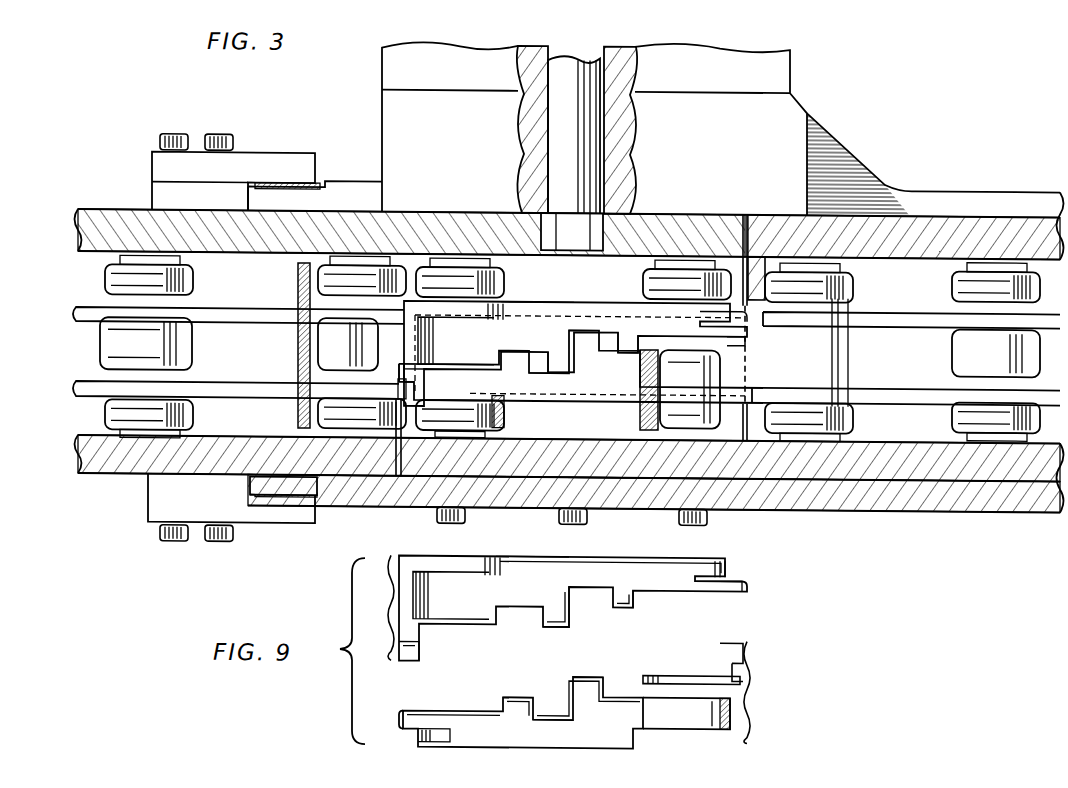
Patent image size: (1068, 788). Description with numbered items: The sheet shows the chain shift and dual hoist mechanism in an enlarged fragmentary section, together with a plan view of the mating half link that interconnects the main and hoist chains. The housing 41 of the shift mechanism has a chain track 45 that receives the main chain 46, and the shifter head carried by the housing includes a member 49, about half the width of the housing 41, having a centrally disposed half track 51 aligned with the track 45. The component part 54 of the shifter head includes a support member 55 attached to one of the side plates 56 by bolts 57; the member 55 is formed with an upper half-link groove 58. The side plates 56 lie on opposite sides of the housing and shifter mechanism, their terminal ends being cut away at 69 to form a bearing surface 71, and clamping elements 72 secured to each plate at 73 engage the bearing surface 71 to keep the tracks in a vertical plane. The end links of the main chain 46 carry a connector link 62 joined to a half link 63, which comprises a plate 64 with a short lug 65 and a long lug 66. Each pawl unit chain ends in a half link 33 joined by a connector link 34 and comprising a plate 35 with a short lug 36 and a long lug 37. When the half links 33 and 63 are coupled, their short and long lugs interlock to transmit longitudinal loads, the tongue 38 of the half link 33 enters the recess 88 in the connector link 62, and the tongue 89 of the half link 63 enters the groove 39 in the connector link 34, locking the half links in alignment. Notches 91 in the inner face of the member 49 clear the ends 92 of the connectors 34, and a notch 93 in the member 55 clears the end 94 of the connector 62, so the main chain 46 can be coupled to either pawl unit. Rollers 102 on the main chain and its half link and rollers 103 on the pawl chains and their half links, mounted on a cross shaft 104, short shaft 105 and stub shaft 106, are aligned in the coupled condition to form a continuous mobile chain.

In FIG. 3, the half link 33 is at (588, 405).
In FIG. 9, the half link 33 is at (468, 708).
In FIG. 3, the connector link 34 is at (840, 358).
In FIG. 9, the connector link 34 is at (742, 707).
In FIG. 3, the plate 35 is at (597, 394).
In FIG. 9, the plate 35 is at (553, 722).
In FIG. 3, the short lug 36 is at (516, 349).
In FIG. 9, the short lug 36 is at (518, 700).
In FIG. 3, the long lug 37 is at (590, 333).
In FIG. 9, the long lug 37 is at (598, 690).
In FIG. 3, the tongue 38 is at (403, 366).
In FIG. 9, the tongue 38 is at (403, 716).
In FIG. 3, the groove 39 is at (745, 336).
In FIG. 9, the groove 39 is at (744, 667).
In FIG. 3, the housing 41 is at (90, 216).
In FIG. 3, the chain track 45 is at (106, 250).
In FIG. 3, the main chain 46 is at (246, 298).
In FIG. 3, the member 49 is at (393, 228).
In FIG. 3, the half track 51 is at (640, 254).
In FIG. 3, the component part 54 is at (660, 488).
In FIG. 3, the support member 55 is at (510, 478).
In FIG. 3, the side plate 56 is at (918, 186).
In FIG. 3, the bolts 57 is at (437, 513).
In FIG. 3, the upper half-link groove 58 is at (585, 436).
In FIG. 3, the connector link 62 is at (393, 298).
In FIG. 9, the connector link 62 is at (398, 570).
In FIG. 3, the half link 63 is at (593, 292).
In FIG. 9, the half link 63 is at (690, 606).
In FIG. 3, the plate 64 is at (545, 313).
In FIG. 9, the plate 64 is at (539, 590).
In FIG. 3, the short lug 65 is at (630, 330).
In FIG. 9, the short lug 65 is at (637, 603).
In FIG. 3, the long lug 66 is at (557, 354).
In FIG. 9, the long lug 66 is at (556, 611).
In FIG. 3, the cut away 69 is at (306, 182).
In FIG. 3, the bearing surface 71 is at (270, 194).
In FIG. 3, the clamping element 72 is at (246, 167).
In FIG. 3, the securing point 73 is at (220, 132).
In FIG. 3, the recess 88 is at (412, 362).
In FIG. 3, the tongue 89 is at (742, 335).
In FIG. 9, the tongue 89 is at (747, 586).
In FIG. 3, the notch 91 is at (725, 327).
In FIG. 3, the connector end 92 is at (904, 259).
In FIG. 9, the connector end 92 is at (737, 650).
In FIG. 3, the notch 93 is at (420, 428).
In FIG. 3, the connector end 94 is at (398, 426).
In FIG. 9, the connector end 94 is at (420, 654).
In FIG. 3, the rollers 102 is at (107, 278).
In FIG. 3, the rollers 103 is at (852, 282).
In FIG. 3, the cross shaft 104 is at (330, 258).
In FIG. 3, the short shaft 105 is at (452, 264).
In FIG. 3, the stub shaft 106 is at (690, 264).